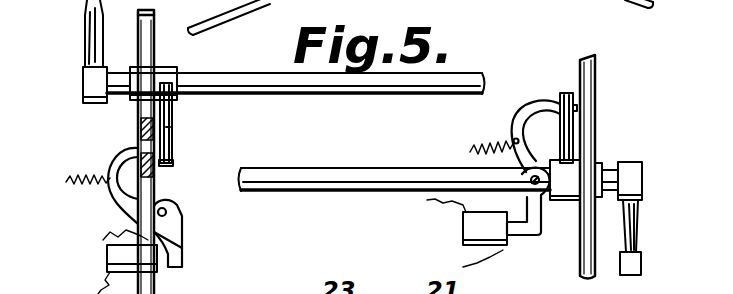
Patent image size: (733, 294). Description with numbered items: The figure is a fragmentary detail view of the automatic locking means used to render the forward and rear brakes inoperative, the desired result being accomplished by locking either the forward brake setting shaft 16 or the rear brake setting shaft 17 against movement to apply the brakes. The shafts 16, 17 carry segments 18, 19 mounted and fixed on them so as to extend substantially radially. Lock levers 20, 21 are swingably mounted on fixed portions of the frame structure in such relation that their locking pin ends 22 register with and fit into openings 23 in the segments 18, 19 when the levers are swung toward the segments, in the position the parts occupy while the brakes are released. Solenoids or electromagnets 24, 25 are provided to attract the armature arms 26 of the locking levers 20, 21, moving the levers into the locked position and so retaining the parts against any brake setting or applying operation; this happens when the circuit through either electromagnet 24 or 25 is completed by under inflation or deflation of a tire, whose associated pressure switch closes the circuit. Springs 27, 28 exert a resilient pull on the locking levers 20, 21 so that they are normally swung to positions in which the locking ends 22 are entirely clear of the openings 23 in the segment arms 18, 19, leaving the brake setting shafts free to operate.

The forward brake setting shaft 16 is at (342, 93).
The rear brake setting shaft 17 is at (374, 188).
The segment 18 is at (168, 127).
The segment 19 is at (566, 93).
The lock lever 20 is at (147, 210).
The lock lever 21 is at (528, 114).
The locking pin end 22 is at (128, 151).
The opening 23 is at (173, 153).
The solenoid or electromagnet 24 is at (113, 263).
The solenoid or electromagnet 25 is at (469, 230).
The armature arm 26 is at (184, 257).
The spring 27 is at (66, 182).
The spring 28 is at (478, 150).